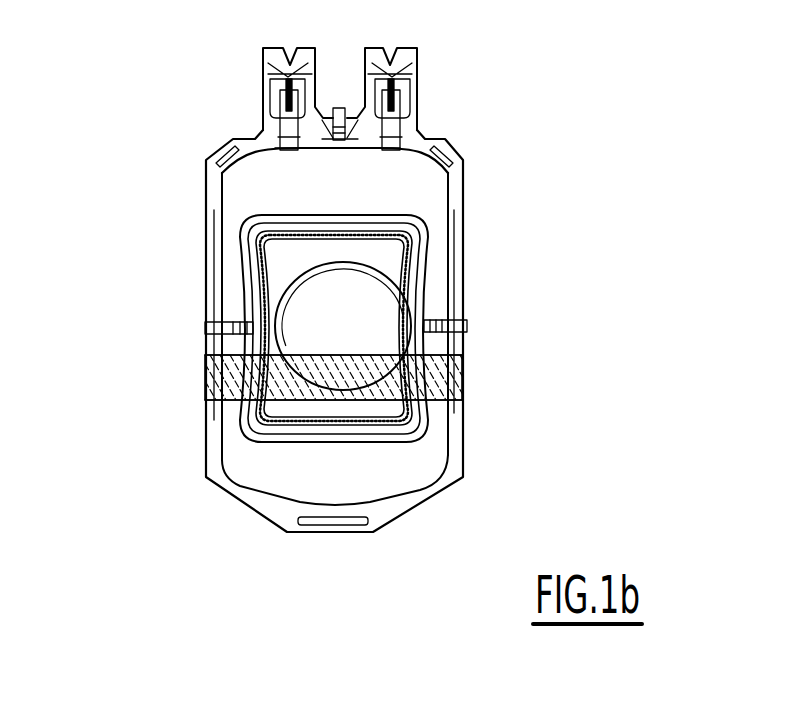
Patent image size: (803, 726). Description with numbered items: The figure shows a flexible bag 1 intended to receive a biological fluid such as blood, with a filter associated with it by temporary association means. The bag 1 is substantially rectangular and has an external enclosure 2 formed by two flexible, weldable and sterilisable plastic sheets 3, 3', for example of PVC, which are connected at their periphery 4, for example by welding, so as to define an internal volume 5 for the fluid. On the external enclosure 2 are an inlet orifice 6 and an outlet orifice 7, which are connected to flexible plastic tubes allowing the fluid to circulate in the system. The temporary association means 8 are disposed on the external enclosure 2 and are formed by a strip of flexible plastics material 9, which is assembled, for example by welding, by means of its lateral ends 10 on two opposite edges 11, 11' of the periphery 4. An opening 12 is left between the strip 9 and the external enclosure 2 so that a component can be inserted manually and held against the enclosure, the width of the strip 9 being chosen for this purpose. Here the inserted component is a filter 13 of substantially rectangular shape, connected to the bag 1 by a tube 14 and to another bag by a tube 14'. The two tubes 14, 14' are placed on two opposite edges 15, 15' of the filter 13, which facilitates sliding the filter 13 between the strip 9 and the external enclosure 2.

The flexible bag 1 is at (542, 241).
The external enclosure 2 is at (405, 468).
The plastic sheet 3 is at (271, 176).
The plastic sheet 3' is at (287, 310).
The periphery 4 is at (205, 482).
The internal volume 5 is at (412, 193).
The inlet orifice 6 is at (290, 45).
The outlet orifice 7 is at (393, 40).
The temporary association means 8 is at (205, 366).
The strip of flexible plastics material 9 is at (277, 375).
The lateral ends 10 is at (205, 382).
The edge of the periphery 11 is at (160, 361).
The edge of the periphery 11' is at (512, 317).
The opening 12 is at (392, 353).
The filter 13 is at (298, 262).
The tube 14 is at (532, 302).
The tube 14' is at (155, 324).
The edge of the filter 15 is at (249, 339).
The edge of the filter 15' is at (398, 309).